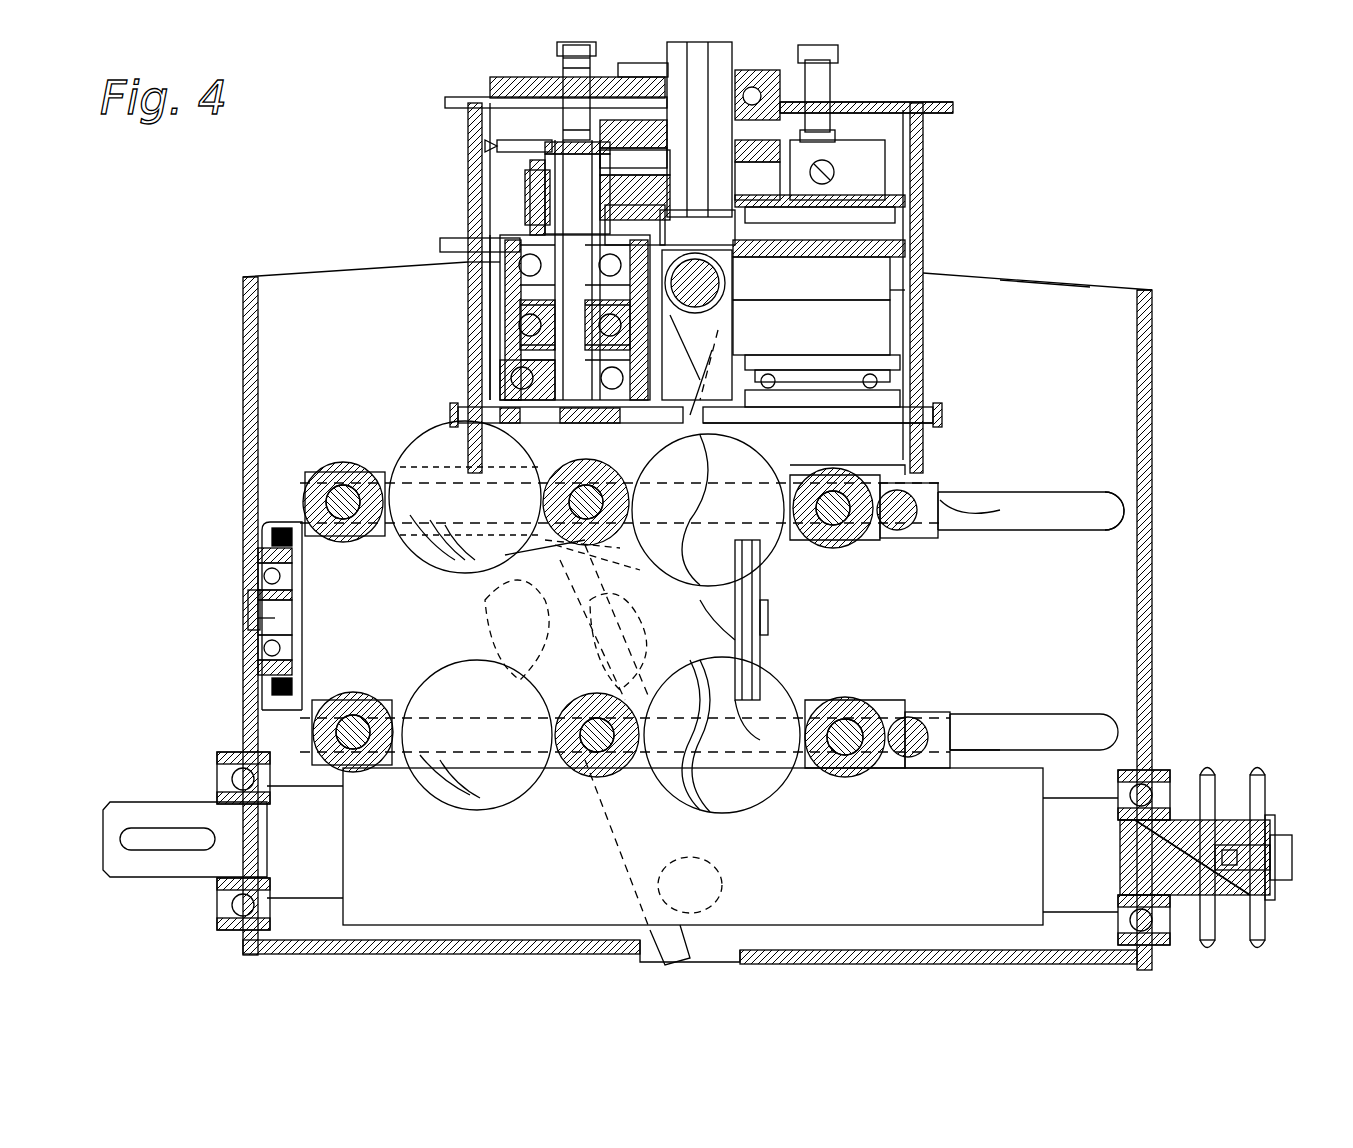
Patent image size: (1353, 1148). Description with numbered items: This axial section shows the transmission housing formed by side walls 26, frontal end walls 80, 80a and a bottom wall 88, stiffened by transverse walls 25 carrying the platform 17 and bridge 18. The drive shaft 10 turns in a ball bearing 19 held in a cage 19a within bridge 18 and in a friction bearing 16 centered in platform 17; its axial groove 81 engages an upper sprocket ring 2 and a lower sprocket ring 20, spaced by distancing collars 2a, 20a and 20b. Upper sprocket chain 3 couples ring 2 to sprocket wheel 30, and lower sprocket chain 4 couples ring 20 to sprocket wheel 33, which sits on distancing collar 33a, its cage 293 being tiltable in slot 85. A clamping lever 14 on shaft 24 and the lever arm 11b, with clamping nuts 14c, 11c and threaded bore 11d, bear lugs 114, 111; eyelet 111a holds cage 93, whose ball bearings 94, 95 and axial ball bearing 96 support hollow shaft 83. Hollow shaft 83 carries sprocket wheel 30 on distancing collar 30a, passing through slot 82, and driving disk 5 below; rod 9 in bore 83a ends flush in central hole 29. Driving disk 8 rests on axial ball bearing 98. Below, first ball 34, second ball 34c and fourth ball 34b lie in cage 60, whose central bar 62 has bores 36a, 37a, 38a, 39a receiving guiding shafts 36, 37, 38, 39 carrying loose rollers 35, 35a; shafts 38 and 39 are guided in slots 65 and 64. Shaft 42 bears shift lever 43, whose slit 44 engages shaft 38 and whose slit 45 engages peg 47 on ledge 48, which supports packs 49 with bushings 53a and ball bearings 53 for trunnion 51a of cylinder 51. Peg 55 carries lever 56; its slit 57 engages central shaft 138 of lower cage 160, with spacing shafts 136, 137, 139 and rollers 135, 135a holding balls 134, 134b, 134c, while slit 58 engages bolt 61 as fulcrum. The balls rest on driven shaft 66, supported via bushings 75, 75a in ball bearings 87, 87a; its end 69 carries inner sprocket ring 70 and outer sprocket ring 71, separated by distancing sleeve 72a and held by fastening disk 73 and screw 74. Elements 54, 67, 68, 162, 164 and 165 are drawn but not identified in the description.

The upper sprocket ring 2 is at (742, 150).
The distancing collar 2a is at (670, 128).
The upper sprocket chain 3 is at (462, 150).
The lower sprocket chain 4 is at (905, 205).
The driving disk 5 is at (512, 425).
The driving disk 8 is at (855, 424).
The rod 9 is at (660, 315).
The drive shaft 10 is at (745, 80).
The lever arm 11b is at (490, 88).
The clamping nut 11c is at (560, 50).
The threaded bore 11d is at (560, 60).
The clamping lever 14 is at (953, 106).
The clamping nut 14c is at (832, 60).
The friction bearing 16 is at (811, 278).
The platform 17 is at (1090, 290).
The bridge 18 is at (445, 102).
The ball bearing 19 is at (905, 102).
The cage 19a is at (655, 78).
The lower sprocket ring 20 is at (757, 181).
The distancing collar 20a is at (540, 178).
The distancing collar 20b is at (670, 225).
The shaft 24 is at (450, 410).
The transverse walls 25 is at (900, 362).
The side walls 26 is at (1140, 290).
The central hole 29 is at (603, 423).
The sprocket wheel 30 is at (520, 138).
The distancing collar 30a is at (520, 235).
The sprocket wheel 33 is at (885, 172).
The distancing collar 33a is at (900, 222).
The first ball 34 is at (400, 445).
The fourth ball 34b is at (720, 585).
The second ball 34c is at (720, 600).
The loose rollers 35 is at (400, 470).
The loose rollers 35a is at (850, 470).
The guiding shaft 36 is at (305, 500).
The transverse bore 36a is at (340, 542).
The guiding shaft 37 is at (840, 548).
The transverse bore 37a is at (875, 540).
The central shaft 38 is at (600, 545).
The transverse bore 38a is at (600, 548).
The guiding shaft 39 is at (900, 535).
The transverse bore 39a is at (950, 538).
The shaft 42 is at (725, 283).
The shift lever 43 is at (730, 325).
The slit 44 is at (505, 460).
The slit 45 is at (575, 630).
The peg 47 is at (500, 665).
The ledge 48 is at (262, 522).
The pack of transverse plates 49 is at (258, 675).
The cylinder 51 is at (262, 700).
The trunnion 51a is at (248, 600).
The ball bearing 53 is at (258, 600).
The bushing 53a is at (260, 555).
The shaft 54 is at (258, 635).
The peg 55 is at (500, 560).
The lever 56 is at (610, 790).
The slit 57 is at (610, 640).
The slit 58 is at (715, 872).
The cage 60 is at (970, 482).
The bolt 61 is at (735, 900).
The central bar 62 is at (1020, 510).
The elongated slot 64 is at (1110, 520).
The elongated slots 65 is at (770, 570).
The driven shaft 66 is at (693, 846).
The drive shaft 67 is at (130, 800).
The keyway 68 is at (145, 842).
The end of driven shaft 69 is at (1160, 840).
The inner sprocket ring 70 is at (1212, 790).
The outer sprocket ring 71 is at (1258, 790).
The distancing sleeve 72a is at (1238, 900).
The fastening disk 73 is at (1270, 820).
The screw 74 is at (1285, 838).
The bushing 75 is at (217, 760).
The bushing 75a is at (1165, 945).
The frontal end wall 80 is at (250, 300).
The frontal end wall 80a is at (1152, 360).
The axial groove 81 is at (704, 129).
The slot 82 is at (500, 235).
The hollow shaft 83 is at (512, 290).
The bore 83a is at (510, 330).
The elongated slot 85 is at (905, 248).
The ball bearing 87 is at (217, 915).
The ball bearing 87a is at (1160, 780).
The bottom wall 88 is at (1035, 962).
The cage 93 is at (468, 248).
The upper ball bearing 94 is at (470, 263).
The lower ball bearing 95 is at (500, 340).
The axial ball bearing 96 is at (500, 368).
The axial ball bearing 98 is at (900, 392).
The lug 111 is at (703, 365).
The eyelet 111a is at (701, 382).
The lug 114 is at (905, 340).
The ball 134 is at (475, 810).
The ball 134b is at (770, 790).
The ball 134c is at (720, 812).
The loose rollers 135 is at (360, 700).
The loose rollers 135a is at (910, 712).
The spacing shaft 136 is at (360, 775).
The spacing shaft 137 is at (860, 775).
The central shaft 138 is at (605, 778).
The spacing shaft 139 is at (920, 758).
The cage 160 is at (955, 700).
The bracket 162 is at (955, 740).
The arm 164 is at (1030, 720).
The blade holder 165 is at (760, 710).
The cage 293 is at (925, 295).